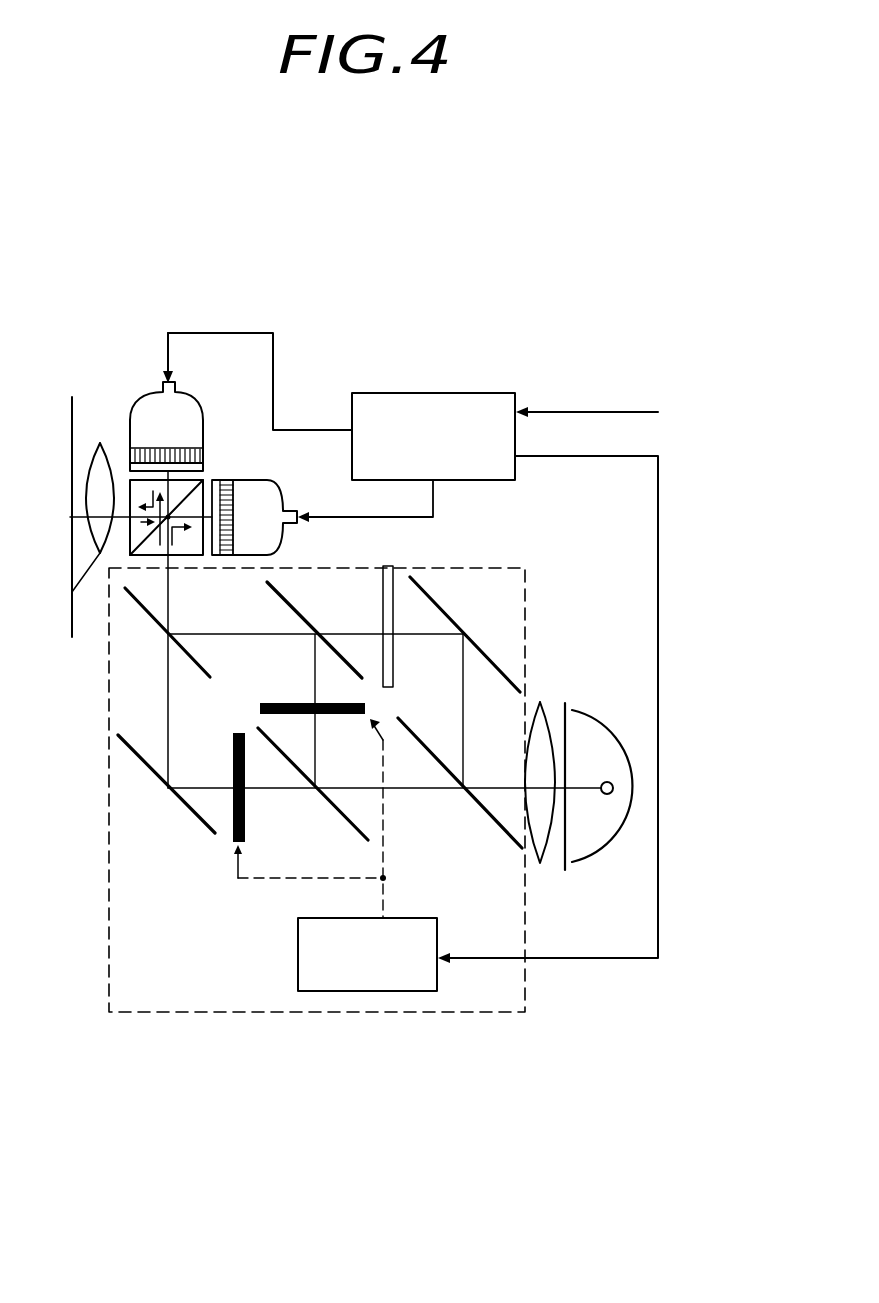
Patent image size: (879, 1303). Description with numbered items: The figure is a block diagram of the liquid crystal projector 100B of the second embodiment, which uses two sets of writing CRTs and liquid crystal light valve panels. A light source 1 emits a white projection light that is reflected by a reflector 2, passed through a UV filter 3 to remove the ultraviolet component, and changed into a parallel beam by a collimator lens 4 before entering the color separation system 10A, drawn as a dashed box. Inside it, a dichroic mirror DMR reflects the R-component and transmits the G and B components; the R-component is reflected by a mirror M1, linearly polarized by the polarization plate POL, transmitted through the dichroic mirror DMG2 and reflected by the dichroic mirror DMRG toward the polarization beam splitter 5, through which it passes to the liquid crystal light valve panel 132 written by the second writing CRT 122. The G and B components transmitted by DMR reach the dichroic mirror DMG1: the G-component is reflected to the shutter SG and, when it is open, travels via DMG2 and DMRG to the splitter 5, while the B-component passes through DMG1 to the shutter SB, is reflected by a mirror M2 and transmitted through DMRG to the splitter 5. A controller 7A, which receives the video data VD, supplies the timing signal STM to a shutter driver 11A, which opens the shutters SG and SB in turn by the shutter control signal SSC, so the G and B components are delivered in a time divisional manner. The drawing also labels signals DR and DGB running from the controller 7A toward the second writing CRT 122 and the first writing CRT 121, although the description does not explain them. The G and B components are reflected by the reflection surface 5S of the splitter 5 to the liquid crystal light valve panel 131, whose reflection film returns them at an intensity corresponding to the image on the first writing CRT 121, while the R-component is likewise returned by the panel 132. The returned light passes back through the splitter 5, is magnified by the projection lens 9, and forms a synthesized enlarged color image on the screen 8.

The light source 1 is at (613, 785).
The reflector 2 is at (610, 717).
The UV filter 3 is at (565, 703).
The collimator lens 4 is at (541, 860).
The polarization beam splitter 5 is at (130, 552).
The reflection surface 5S is at (165, 522).
The controller 7A is at (480, 393).
The screen 8 is at (72, 397).
The projection lens 9 is at (100, 478).
The color separation system 10A is at (297, 1012).
The shutter driver 11A is at (415, 991).
The first writing CRT 121 is at (262, 482).
The second writing CRT 122 is at (203, 400).
The liquid crystal light valve panel 131 is at (228, 480).
The liquid crystal light valve panel 132 is at (203, 455).
The liquid crystal projector 100B is at (257, 167).
The red drive signal DR is at (238, 333).
The green/blue drive signal DGB is at (433, 503).
The video data VD is at (580, 412).
The timing signal STM is at (658, 585).
The polarization plate POL is at (388, 566).
The dichroic mirror DMRG is at (148, 618).
The dichroic mirror DMG2 is at (295, 608).
The dichroic mirror DMG1 is at (347, 819).
The dichroic mirror DMR is at (492, 818).
The mirror M1 is at (493, 660).
The mirror M2 is at (182, 803).
The shutter SB is at (233, 757).
The shutter SG is at (338, 716).
The shutter control signal SSC is at (385, 853).